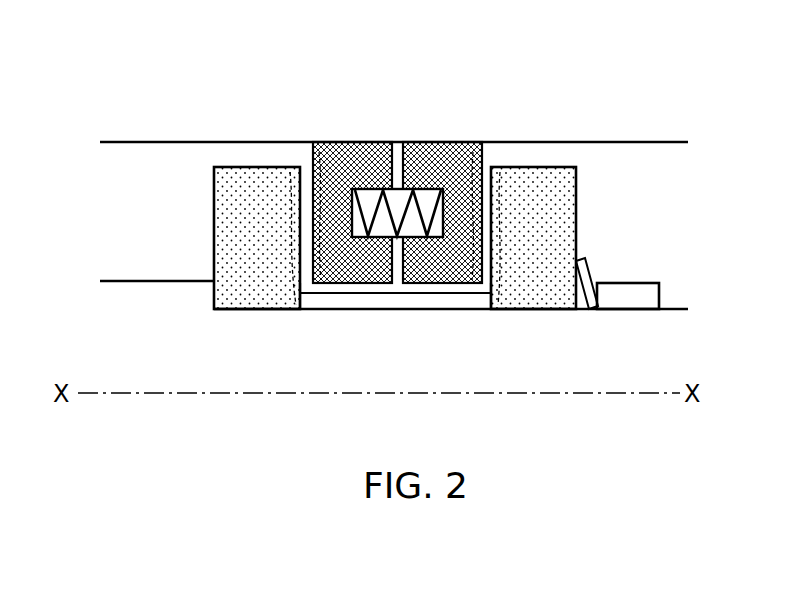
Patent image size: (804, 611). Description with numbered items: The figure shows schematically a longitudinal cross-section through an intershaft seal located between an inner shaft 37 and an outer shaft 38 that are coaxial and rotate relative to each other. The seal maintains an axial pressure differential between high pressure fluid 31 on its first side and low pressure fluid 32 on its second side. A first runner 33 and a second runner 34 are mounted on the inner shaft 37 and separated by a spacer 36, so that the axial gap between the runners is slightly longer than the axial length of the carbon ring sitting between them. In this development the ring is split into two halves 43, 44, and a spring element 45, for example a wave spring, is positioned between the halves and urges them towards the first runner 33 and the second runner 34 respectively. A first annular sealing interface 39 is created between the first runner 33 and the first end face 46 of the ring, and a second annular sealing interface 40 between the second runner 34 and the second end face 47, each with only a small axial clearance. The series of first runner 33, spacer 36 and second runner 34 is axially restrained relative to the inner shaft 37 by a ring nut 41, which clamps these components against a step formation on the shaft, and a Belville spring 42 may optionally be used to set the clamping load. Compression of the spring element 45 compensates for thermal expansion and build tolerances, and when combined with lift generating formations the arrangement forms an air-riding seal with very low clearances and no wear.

The high pressure fluid 31 is at (172, 232).
The low pressure fluid 32 is at (646, 211).
The first runner 33 is at (245, 178).
The second runner 34 is at (543, 183).
The spacer 36 is at (352, 300).
The inner shaft 37 is at (688, 309).
The outer shaft 38 is at (659, 142).
The first annular sealing interface 39 is at (305, 168).
The second annular sealing interface 40 is at (483, 168).
The ring nut 41 is at (653, 297).
The Belville spring 42 is at (592, 270).
The first ring half 43 is at (341, 154).
The second ring half 44 is at (440, 160).
The spring element 45 is at (380, 190).
The first end face 46 is at (293, 260).
The second end face 47 is at (507, 270).